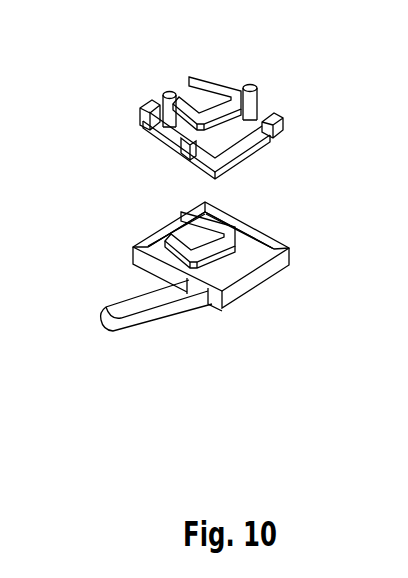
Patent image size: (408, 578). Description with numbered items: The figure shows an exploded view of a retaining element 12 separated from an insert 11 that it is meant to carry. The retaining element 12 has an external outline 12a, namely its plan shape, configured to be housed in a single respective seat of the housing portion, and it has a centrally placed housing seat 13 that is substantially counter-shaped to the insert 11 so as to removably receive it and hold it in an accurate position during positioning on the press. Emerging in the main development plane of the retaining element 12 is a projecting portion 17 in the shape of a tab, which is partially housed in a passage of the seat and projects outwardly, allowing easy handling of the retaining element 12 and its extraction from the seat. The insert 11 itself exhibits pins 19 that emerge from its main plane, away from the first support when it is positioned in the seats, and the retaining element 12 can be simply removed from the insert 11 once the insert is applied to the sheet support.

The insert 11 is at (254, 143).
The pins 19 is at (173, 95).
The retaining element 12 is at (264, 281).
The external outline 12a is at (268, 240).
The housing seat 13 is at (182, 220).
The projecting portion 17 is at (118, 301).